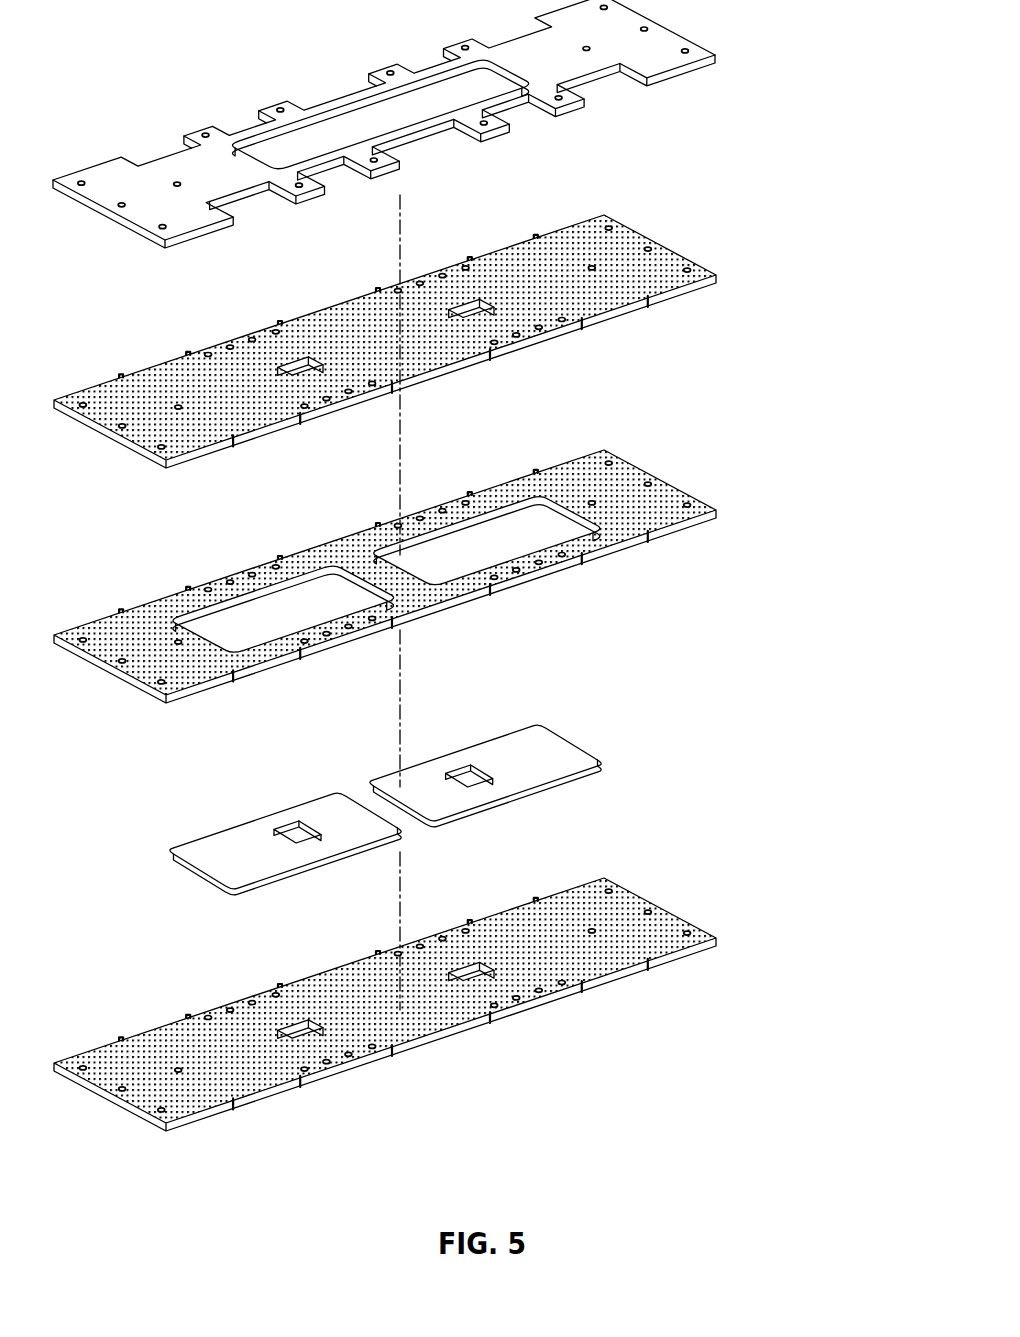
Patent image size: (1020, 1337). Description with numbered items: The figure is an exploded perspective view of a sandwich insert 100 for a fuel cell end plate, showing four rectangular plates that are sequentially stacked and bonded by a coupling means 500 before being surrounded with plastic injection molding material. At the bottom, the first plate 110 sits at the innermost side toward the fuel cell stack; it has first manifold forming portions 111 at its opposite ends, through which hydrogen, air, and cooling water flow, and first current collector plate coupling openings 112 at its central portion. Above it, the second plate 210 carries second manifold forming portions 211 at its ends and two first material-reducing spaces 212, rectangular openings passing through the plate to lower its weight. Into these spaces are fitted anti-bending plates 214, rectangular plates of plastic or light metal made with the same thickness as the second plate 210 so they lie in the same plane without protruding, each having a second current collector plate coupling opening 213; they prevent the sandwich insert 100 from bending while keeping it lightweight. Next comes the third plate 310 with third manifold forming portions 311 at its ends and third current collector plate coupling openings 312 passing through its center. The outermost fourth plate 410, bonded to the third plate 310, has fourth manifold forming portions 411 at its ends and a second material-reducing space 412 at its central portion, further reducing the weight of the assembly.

The sandwich insert 100 is at (838, 73).
The first plate 110 is at (442, 986).
The first manifold forming portions 111 is at (130, 1073).
The first current collector plate coupling openings 112 is at (458, 969).
The second plate 210 is at (441, 557).
The second manifold forming portions 211 is at (133, 643).
The first material-reducing spaces 212 is at (393, 558).
The second current collector plate coupling opening 213 is at (466, 771).
The anti-bending plates 214 is at (431, 748).
The third plate 310 is at (442, 341).
The third manifold forming portions 311 is at (104, 381).
The third current collector plate coupling openings 312 is at (293, 357).
The fourth plate 410 is at (441, 124).
The fourth manifold forming portions 411 is at (100, 172).
The second material-reducing space 412 is at (395, 128).
The coupling means 500 is at (223, 390).